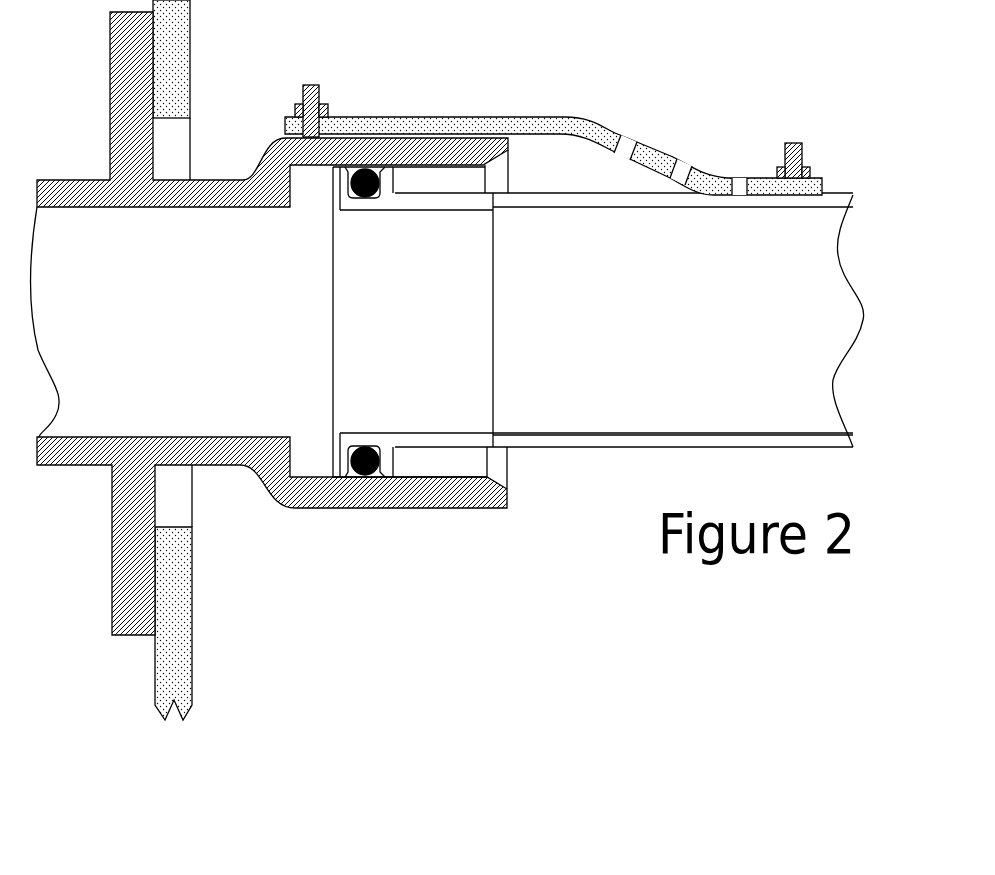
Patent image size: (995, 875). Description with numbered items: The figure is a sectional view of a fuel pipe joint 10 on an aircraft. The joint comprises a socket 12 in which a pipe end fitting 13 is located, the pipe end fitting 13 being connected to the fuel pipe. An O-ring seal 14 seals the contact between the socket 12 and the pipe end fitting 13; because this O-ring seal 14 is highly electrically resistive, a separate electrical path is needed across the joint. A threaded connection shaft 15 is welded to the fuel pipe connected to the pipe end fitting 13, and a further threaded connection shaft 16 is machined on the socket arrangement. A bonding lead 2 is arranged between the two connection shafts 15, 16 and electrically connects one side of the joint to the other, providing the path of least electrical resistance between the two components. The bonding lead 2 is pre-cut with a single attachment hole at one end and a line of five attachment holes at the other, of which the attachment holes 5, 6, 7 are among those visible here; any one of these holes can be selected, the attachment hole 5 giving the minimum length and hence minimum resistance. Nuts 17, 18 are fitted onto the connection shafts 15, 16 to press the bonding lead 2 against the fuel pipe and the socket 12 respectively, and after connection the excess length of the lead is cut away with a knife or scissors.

The bonding lead 2 is at (448, 119).
The attachment hole 5 is at (621, 140).
The attachment hole 6 is at (678, 170).
The attachment hole 7 is at (738, 185).
The fuel pipe joint 10 is at (582, 528).
The socket 12 is at (373, 508).
The pipe end fitting 13 is at (450, 433).
The O-ring seal 14 is at (366, 447).
The threaded connection shaft 15 is at (785, 143).
The threaded connection shaft 16 is at (316, 86).
The nut 17 is at (806, 172).
The nut 18 is at (323, 107).